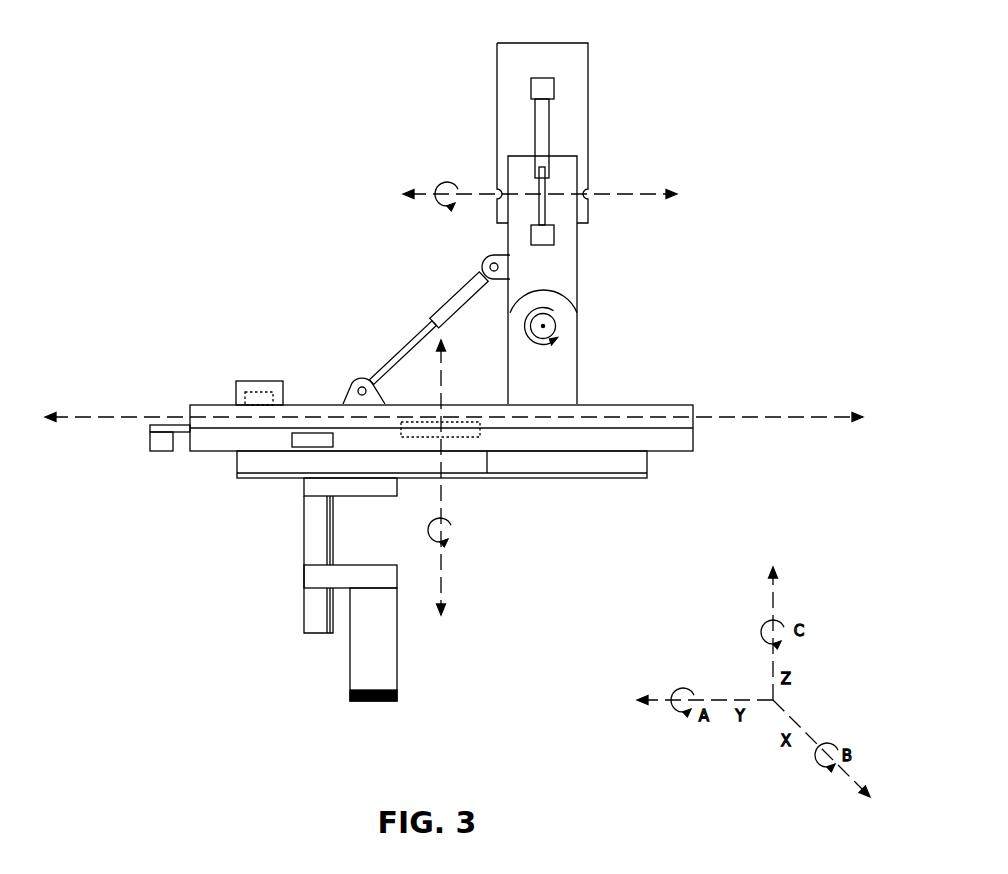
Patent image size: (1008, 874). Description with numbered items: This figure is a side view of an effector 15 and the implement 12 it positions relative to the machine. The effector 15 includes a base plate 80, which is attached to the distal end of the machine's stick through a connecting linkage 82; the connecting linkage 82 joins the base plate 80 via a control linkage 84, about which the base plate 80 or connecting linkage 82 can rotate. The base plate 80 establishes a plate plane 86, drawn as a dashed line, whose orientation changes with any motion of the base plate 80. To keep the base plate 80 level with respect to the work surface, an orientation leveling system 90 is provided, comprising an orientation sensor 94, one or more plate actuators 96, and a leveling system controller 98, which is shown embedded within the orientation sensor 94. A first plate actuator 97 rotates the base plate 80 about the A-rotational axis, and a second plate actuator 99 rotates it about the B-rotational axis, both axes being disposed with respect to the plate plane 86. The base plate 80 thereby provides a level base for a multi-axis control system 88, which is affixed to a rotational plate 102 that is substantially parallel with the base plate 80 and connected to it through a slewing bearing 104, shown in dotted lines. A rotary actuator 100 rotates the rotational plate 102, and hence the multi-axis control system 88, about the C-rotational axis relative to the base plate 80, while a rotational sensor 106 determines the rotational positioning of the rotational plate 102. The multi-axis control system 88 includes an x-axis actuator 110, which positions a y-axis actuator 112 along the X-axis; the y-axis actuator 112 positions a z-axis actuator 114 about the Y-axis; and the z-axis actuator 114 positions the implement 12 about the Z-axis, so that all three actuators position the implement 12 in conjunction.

The effector 15 is at (357, 177).
The base plate 80 is at (647, 405).
The connecting linkage 82 is at (588, 87).
The control linkage 84 is at (577, 383).
The plate plane 86 is at (100, 417).
The multi-axis control system 88 is at (273, 498).
The orientation leveling system 90 is at (363, 298).
The orientation sensor 94 is at (260, 381).
The plate actuators 96 is at (452, 293).
The first plate actuator 97 is at (549, 133).
The leveling system controller 98 is at (274, 392).
The second plate actuator 99 is at (458, 316).
The rotary actuator 100 is at (162, 452).
The rotational plate 102 is at (225, 452).
The slewing bearing 104 is at (453, 422).
The rotational sensor 106 is at (303, 433).
The x-axis actuator 110 is at (462, 478).
The y-axis actuator 112 is at (350, 498).
The z-axis actuator 114 is at (304, 566).
The implement 12 is at (397, 678).